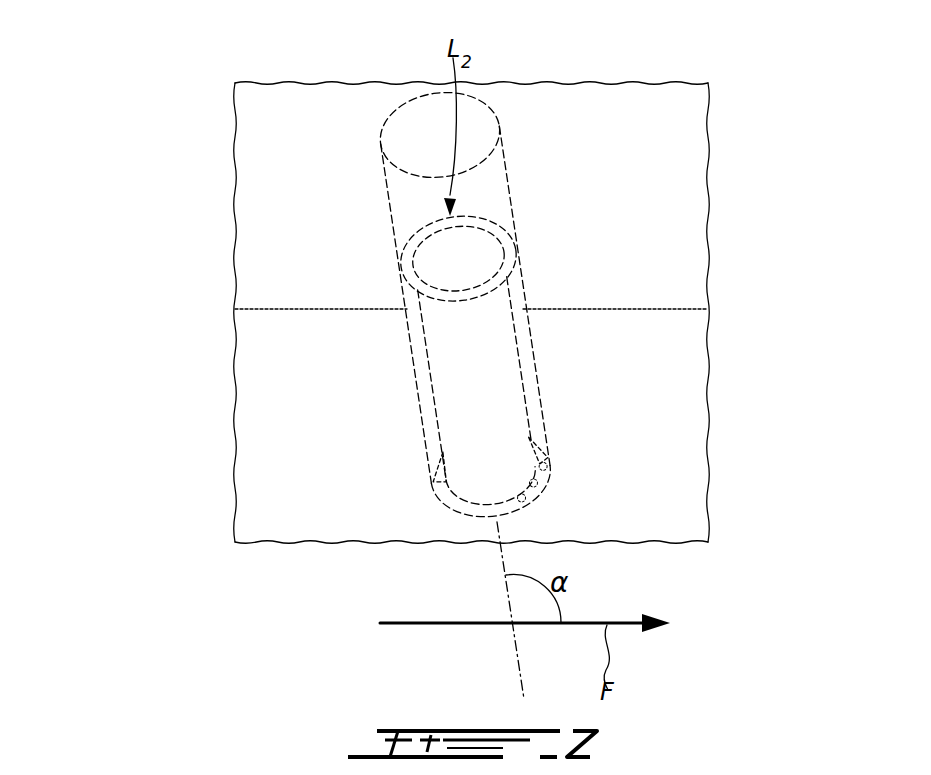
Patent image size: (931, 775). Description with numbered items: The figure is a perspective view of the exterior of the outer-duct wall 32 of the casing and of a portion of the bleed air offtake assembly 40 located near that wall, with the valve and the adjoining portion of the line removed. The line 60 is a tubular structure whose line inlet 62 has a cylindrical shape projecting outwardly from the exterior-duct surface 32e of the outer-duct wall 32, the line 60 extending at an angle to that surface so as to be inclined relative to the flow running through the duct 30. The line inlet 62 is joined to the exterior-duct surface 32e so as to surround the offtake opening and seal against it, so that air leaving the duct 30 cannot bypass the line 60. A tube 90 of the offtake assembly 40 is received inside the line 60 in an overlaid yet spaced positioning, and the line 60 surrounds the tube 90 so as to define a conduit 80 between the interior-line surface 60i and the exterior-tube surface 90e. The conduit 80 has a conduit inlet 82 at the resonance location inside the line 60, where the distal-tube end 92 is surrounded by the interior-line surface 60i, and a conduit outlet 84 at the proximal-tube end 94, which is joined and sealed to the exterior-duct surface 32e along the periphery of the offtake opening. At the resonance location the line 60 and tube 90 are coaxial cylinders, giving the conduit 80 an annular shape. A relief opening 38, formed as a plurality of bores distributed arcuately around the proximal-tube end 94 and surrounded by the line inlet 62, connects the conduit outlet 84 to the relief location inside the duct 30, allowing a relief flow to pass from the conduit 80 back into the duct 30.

The duct 30 is at (197, 595).
The outer-duct wall 32 is at (542, 313).
The exterior-duct surface 32e is at (663, 371).
The relief opening 38 is at (566, 470).
The offtake assembly 40 is at (176, 116).
The line 60 is at (393, 208).
The interior-line surface 60i is at (397, 137).
The line inlet 62 is at (445, 497).
The conduit 80 is at (509, 240).
The conduit inlet 82 is at (521, 252).
The conduit outlet 84 is at (550, 457).
The tube 90 is at (407, 379).
The exterior-tube surface 90e is at (450, 352).
The distal-tube end 92 is at (408, 248).
The proximal-tube end 94 is at (434, 483).